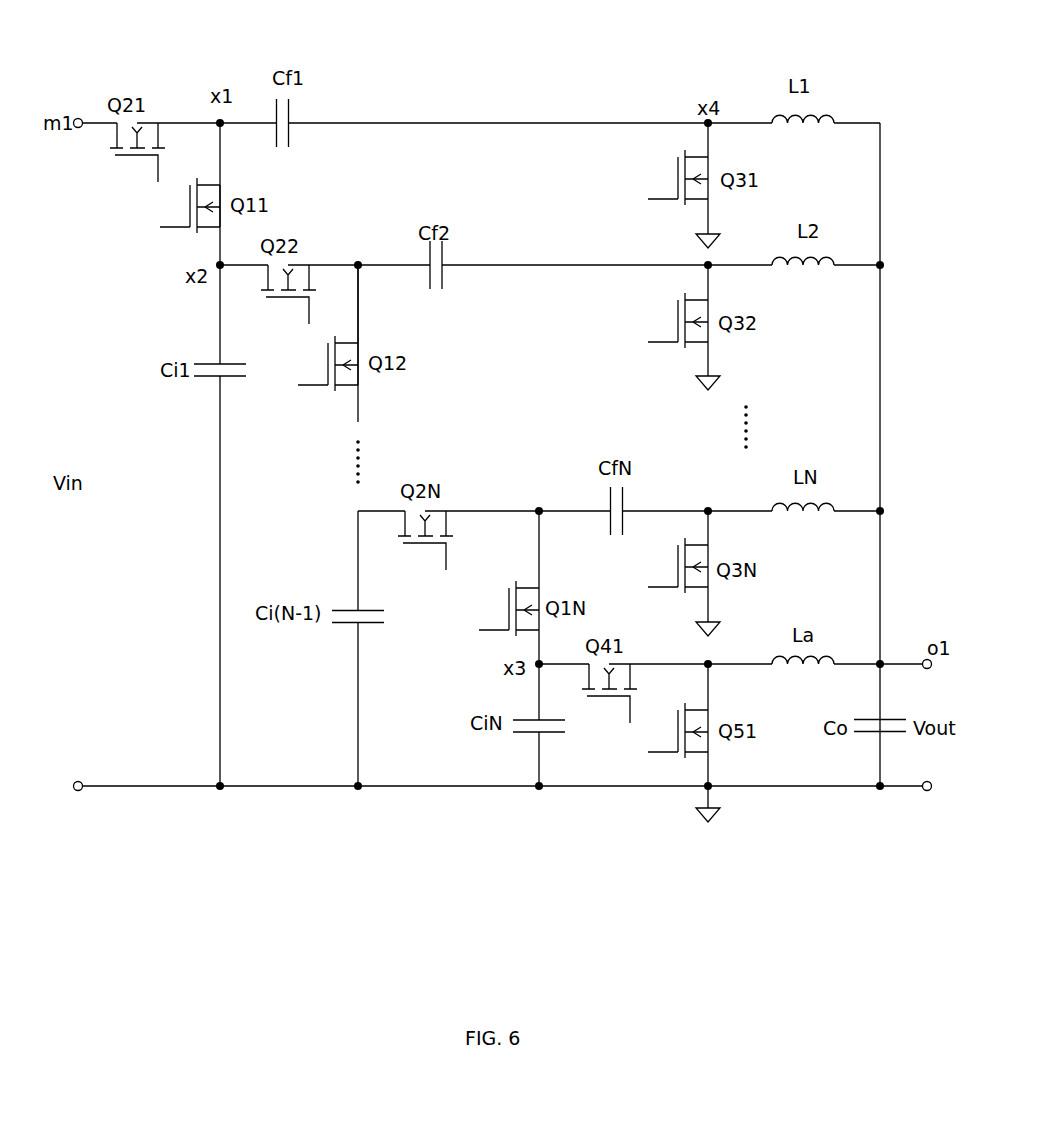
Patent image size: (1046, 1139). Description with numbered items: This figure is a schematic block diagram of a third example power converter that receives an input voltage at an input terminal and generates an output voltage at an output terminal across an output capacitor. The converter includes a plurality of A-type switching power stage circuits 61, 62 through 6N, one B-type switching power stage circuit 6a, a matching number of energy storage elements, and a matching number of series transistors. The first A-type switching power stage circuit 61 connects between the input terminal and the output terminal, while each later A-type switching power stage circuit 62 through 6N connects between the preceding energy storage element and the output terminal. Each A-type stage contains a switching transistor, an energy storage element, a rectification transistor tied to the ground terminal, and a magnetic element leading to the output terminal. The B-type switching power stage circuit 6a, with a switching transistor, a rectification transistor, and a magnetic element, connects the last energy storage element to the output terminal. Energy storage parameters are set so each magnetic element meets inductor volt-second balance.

The A-type switching power stage circuit 61 is at (477, 102).
The A-type switching power stage circuit 62 is at (527, 243).
The A-type switching power stage circuit 6N is at (515, 472).
The B-type switching power stage circuit 6a is at (770, 635).